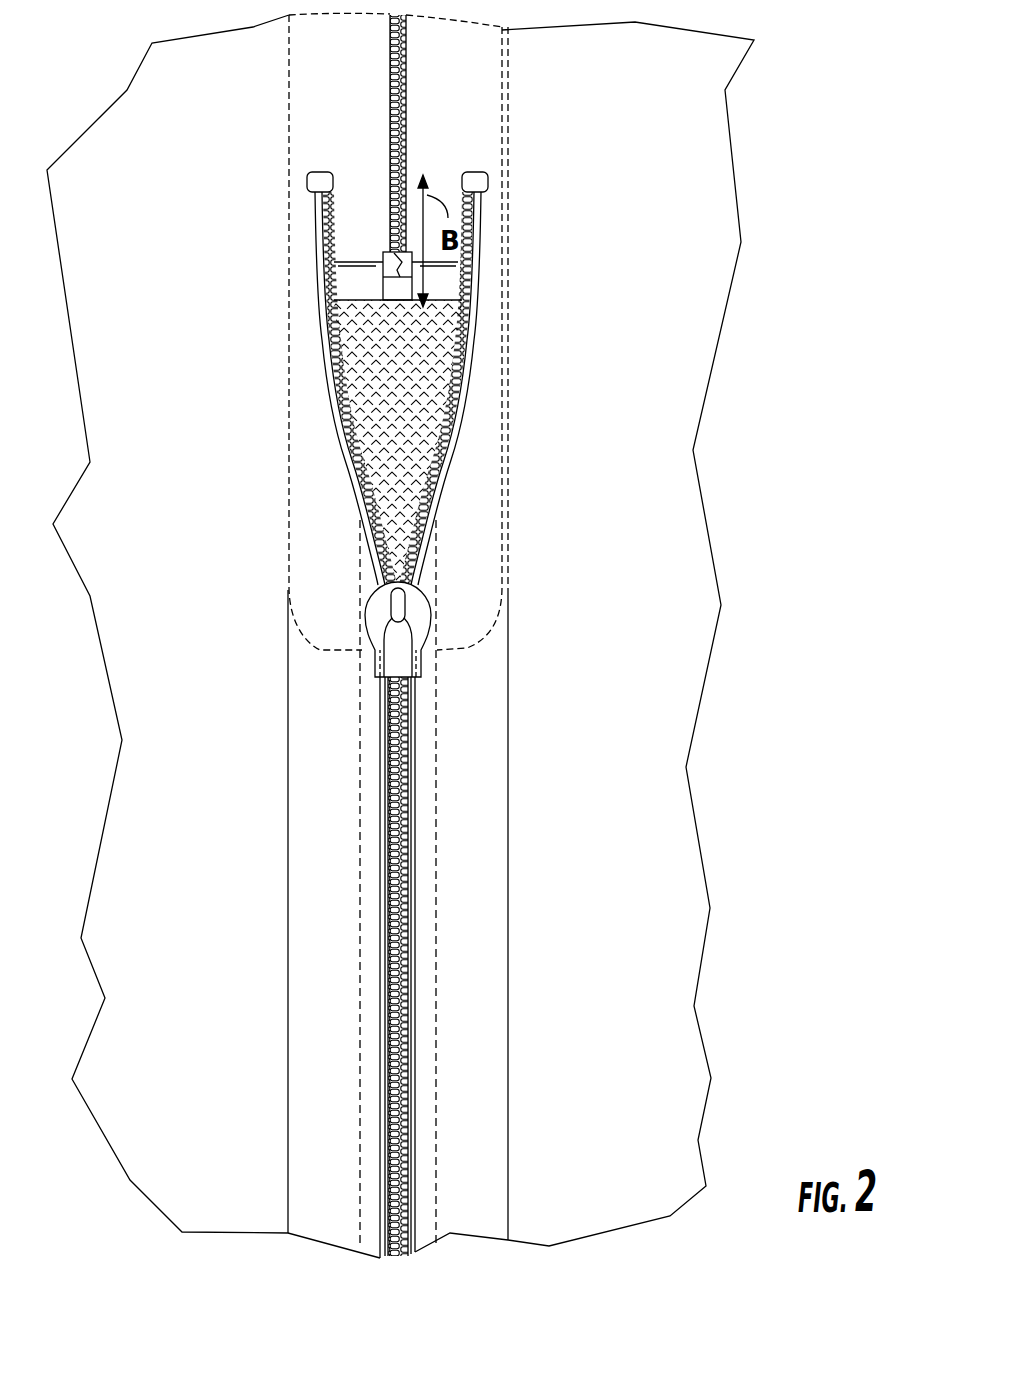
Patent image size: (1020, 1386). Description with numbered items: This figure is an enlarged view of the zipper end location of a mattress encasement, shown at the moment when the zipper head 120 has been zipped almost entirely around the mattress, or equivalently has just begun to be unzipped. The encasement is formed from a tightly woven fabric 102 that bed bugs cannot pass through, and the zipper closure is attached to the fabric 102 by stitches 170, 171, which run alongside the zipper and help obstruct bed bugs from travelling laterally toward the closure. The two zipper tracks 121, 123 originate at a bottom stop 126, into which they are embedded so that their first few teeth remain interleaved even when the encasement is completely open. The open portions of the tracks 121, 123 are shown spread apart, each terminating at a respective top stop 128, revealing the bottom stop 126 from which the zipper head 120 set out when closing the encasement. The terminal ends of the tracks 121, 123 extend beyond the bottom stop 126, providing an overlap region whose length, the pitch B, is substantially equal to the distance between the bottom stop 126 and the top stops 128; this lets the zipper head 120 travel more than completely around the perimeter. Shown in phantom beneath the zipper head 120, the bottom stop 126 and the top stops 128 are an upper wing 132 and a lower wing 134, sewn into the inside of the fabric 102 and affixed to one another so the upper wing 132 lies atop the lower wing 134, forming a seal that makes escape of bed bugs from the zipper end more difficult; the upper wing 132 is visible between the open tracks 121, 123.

The fabric 102 is at (636, 815).
The zipper head 120 is at (428, 625).
The zipper track 121 is at (325, 372).
The zipper track 123 is at (468, 347).
The bottom stop 126 is at (397, 292).
The top stop 128 is at (477, 174).
The upper wing 132 is at (289, 252).
The lower wing 134 is at (508, 264).
The stitches 170 is at (437, 735).
The stitches 171 is at (360, 700).